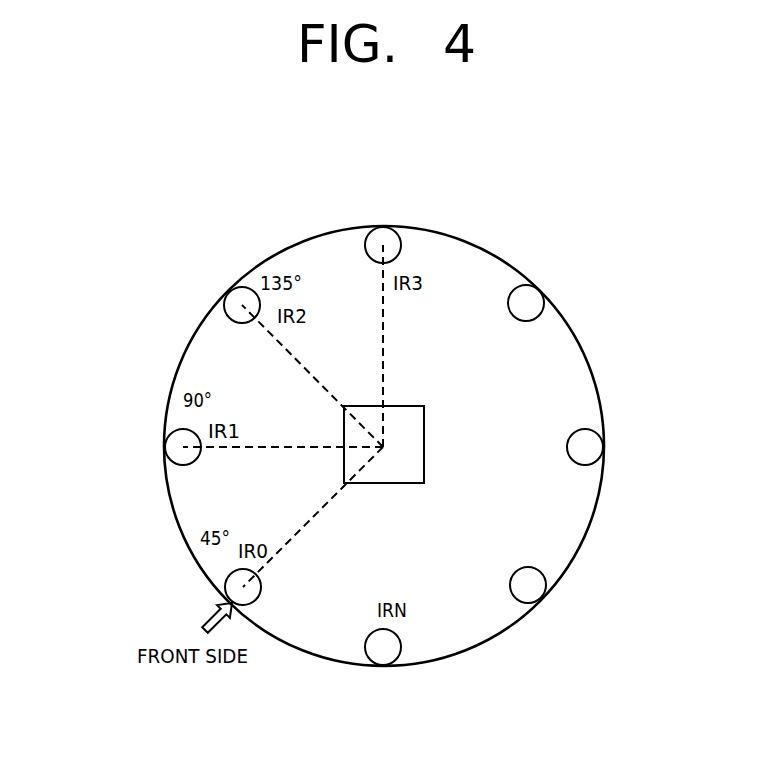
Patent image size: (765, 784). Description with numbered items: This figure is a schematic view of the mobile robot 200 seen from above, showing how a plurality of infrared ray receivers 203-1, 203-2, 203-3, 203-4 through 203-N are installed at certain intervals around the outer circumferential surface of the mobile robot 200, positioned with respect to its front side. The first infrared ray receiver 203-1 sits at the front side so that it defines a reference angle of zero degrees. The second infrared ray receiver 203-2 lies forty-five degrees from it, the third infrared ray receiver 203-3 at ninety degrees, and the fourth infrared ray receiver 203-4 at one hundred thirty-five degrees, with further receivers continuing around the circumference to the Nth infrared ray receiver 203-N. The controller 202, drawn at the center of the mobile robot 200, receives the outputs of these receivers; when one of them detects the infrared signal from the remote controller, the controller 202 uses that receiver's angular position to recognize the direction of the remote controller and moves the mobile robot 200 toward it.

The mobile robot 200 is at (170, 363).
The controller 202 is at (413, 455).
The first infrared ray receiver 203-1 is at (226, 591).
The second infrared ray receiver 203-2 is at (167, 447).
The third infrared ray receiver 203-3 is at (232, 297).
The fourth infrared ray receiver 203-4 is at (383, 228).
The Nth infrared ray receiver 203-N is at (385, 660).